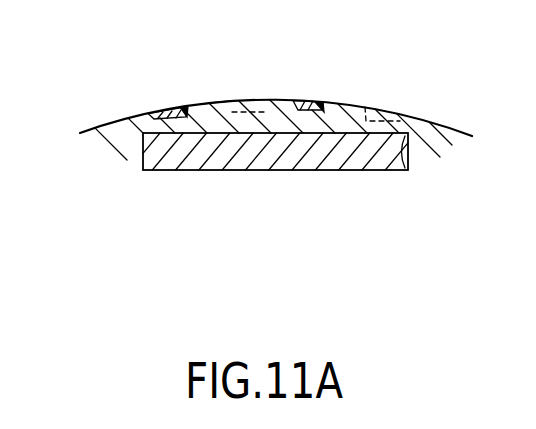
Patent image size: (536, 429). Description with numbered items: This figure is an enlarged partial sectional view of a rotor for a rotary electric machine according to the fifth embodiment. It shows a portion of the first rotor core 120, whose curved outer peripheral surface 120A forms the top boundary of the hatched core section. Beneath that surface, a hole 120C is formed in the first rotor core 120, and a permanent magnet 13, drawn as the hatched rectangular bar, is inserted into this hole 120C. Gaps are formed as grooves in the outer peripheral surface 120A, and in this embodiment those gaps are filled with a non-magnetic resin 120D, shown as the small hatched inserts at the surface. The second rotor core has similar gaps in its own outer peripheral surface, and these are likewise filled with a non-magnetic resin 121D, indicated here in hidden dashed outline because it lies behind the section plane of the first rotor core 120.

The permanent magnet 13 is at (296, 172).
The first rotor core 120 is at (112, 134).
The outer peripheral surface 120A is at (213, 105).
The hole 120C is at (407, 152).
The non-magnetic resin 120D is at (167, 109).
The non-magnetic resin 121D is at (249, 110).